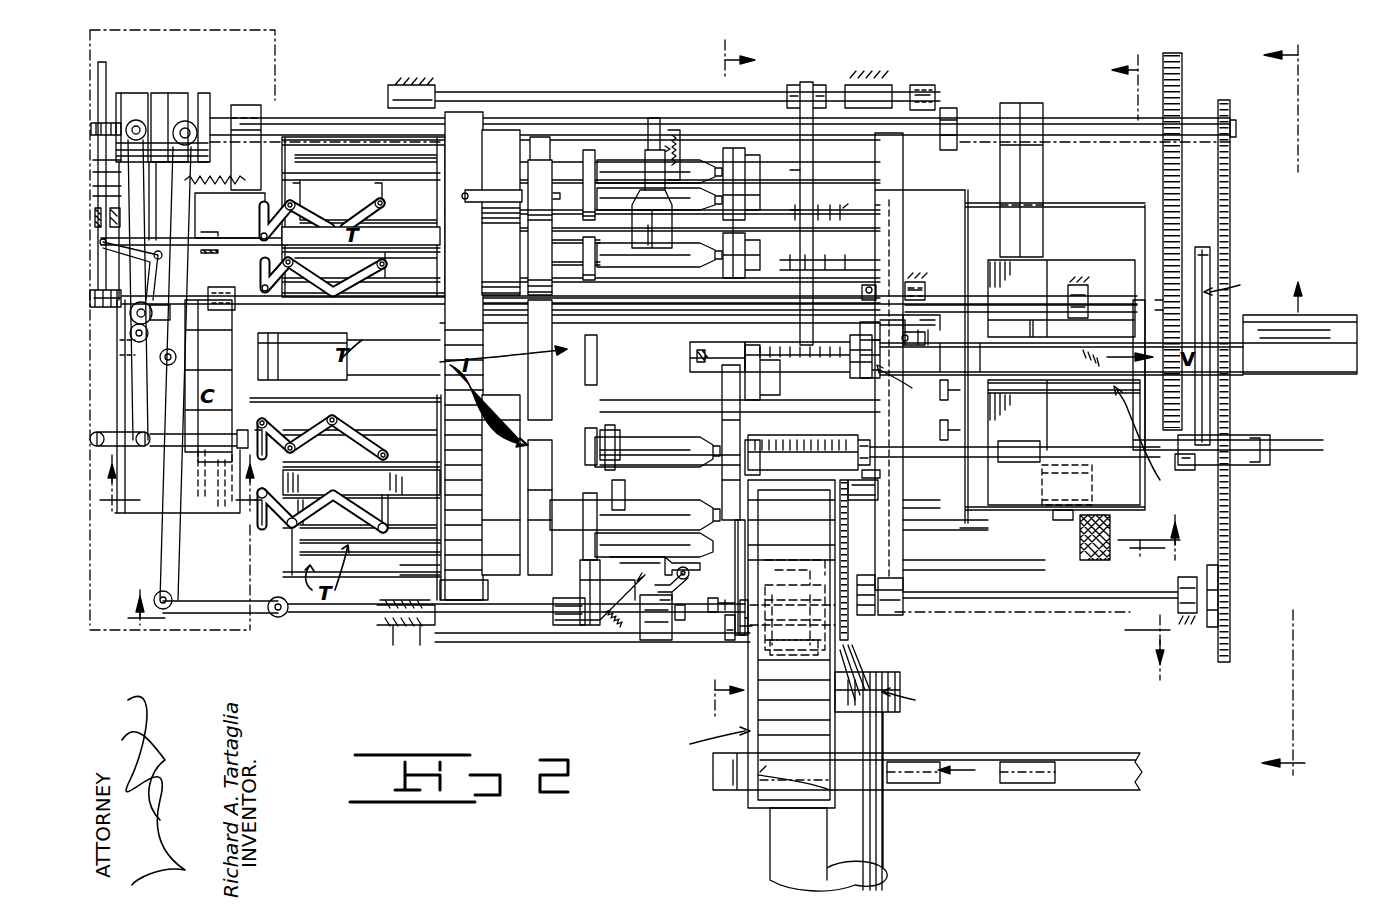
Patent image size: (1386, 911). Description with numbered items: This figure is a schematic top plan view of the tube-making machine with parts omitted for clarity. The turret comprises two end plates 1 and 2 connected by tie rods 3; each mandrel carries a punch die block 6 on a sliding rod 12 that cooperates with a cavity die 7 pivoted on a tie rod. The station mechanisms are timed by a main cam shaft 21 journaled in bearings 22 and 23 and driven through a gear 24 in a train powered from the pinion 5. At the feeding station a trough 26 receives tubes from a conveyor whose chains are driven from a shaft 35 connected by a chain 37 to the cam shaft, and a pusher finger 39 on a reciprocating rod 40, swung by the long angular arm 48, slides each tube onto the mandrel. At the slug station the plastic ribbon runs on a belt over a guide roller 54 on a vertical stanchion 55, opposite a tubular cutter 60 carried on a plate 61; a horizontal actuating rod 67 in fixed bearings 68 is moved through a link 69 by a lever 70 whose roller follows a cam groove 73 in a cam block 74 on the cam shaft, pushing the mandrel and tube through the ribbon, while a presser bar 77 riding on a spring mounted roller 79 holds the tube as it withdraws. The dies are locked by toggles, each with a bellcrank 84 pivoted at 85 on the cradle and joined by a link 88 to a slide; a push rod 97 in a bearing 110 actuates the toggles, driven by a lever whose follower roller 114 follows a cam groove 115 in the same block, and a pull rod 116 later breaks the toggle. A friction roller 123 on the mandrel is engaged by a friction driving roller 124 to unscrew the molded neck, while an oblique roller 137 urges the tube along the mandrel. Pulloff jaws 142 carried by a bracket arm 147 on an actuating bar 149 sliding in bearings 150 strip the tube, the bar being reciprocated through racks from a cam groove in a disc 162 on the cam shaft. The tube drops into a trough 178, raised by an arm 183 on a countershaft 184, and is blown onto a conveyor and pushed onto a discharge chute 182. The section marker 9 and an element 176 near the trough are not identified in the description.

The turret end plate 1 is at (460, 100).
The turret end plate 2 is at (895, 590).
The tie rods 3 is at (689, 380).
The pinion 5 is at (652, 568).
The punch die block 6 is at (700, 160).
The cavity die 7 is at (740, 145).
The section line 9- 9 is at (170, 501).
The rod 12 is at (1144, 356).
The main cam shaft 21 is at (1100, 128).
The bearing 22 is at (1043, 103).
The bearing 23 is at (270, 118).
The gear 24 is at (1182, 108).
The trough 26 is at (850, 440).
The shaft 35 is at (1040, 600).
The chain 37 is at (1232, 246).
The pusher finger 39 is at (870, 470).
The rod 40 is at (978, 456).
The long angular arm 48 is at (1240, 446).
The guide roller 54 is at (782, 595).
The vertical frame stanchion 55 is at (781, 545).
The tubular cutter 60 is at (745, 556).
The plate 61 is at (735, 636).
The horizontal actuating rod 67 is at (535, 642).
The fixed bearings 68 is at (660, 645).
The link 69 is at (283, 620).
The lever 70 is at (178, 582).
The cam groove 73 is at (195, 100).
The cam block 74 is at (170, 100).
The presser bar 77 is at (633, 575).
The spring mounted roller 79 is at (680, 575).
The bellcrank 84 is at (268, 345).
The bellcrank pivot 85 is at (292, 205).
The link 88 is at (372, 440).
The push rod 97 is at (258, 420).
The bearing 110 is at (213, 455).
The follower roller 114 is at (140, 356).
The cam groove 115 is at (134, 106).
The pull rod 116 is at (235, 245).
The friction roller 123 is at (560, 150).
The friction driving roller 124 is at (515, 150).
The roller 137 is at (655, 210).
The pulloff jaws 142 is at (845, 376).
The bracket arm 147 is at (875, 305).
The actuating bar 149 is at (940, 300).
The bearings 150 is at (1078, 282).
The disc 162 is at (103, 70).
The bracket 176 is at (690, 350).
The trough 178 is at (745, 348).
The discharge chute 182 is at (1282, 372).
The arm 183 is at (812, 110).
The countershaft 184 is at (895, 100).